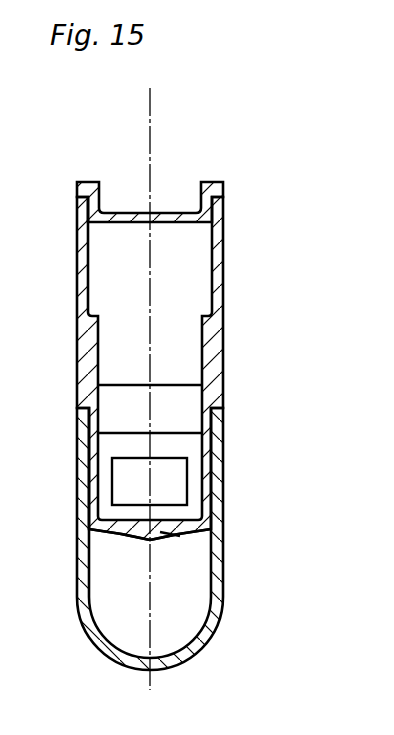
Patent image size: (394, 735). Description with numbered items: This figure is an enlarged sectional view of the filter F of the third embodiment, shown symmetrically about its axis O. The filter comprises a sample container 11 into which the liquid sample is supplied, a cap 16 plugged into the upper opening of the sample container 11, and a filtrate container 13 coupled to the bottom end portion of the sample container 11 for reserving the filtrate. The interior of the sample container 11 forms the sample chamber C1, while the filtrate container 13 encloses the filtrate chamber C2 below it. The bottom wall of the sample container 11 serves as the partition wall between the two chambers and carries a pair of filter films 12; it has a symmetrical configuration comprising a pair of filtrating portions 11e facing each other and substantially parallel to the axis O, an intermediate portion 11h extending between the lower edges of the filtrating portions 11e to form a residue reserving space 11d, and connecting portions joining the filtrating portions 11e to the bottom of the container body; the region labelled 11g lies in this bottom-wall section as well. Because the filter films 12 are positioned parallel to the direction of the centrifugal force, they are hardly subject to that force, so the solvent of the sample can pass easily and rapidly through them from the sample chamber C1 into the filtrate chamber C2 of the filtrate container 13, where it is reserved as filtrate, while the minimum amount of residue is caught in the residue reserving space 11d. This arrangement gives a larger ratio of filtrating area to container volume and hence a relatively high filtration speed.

The cap 16 is at (173, 211).
The sample container 11 is at (275, 255).
The filtrate container 13 is at (268, 540).
The partition of tube 11g is at (151, 409).
The filter film 12 is at (165, 476).
The filtrating portion 11e is at (192, 451).
The residue reserving space 11d is at (142, 515).
The intermediate portion 11h is at (272, 622).
The filter F is at (30, 350).
The axis O is at (185, 117).
The sample chamber C1 is at (136, 284).
The filtrate chamber C2 is at (142, 618).